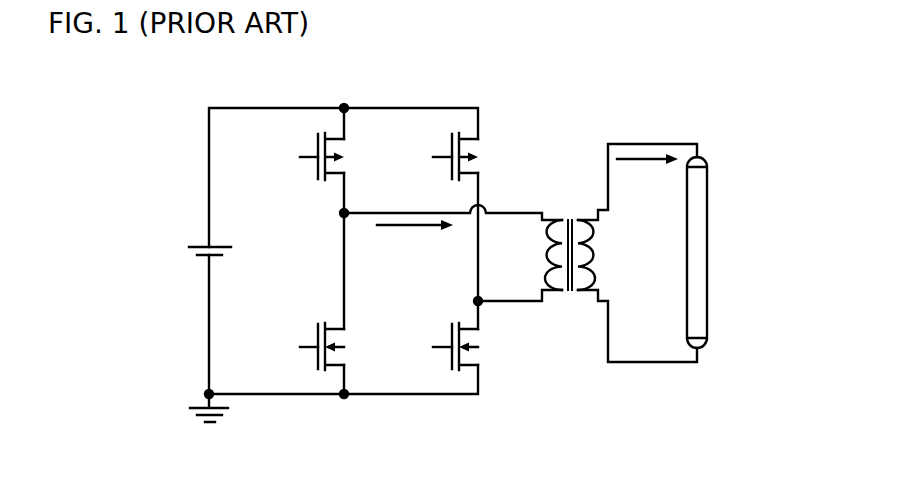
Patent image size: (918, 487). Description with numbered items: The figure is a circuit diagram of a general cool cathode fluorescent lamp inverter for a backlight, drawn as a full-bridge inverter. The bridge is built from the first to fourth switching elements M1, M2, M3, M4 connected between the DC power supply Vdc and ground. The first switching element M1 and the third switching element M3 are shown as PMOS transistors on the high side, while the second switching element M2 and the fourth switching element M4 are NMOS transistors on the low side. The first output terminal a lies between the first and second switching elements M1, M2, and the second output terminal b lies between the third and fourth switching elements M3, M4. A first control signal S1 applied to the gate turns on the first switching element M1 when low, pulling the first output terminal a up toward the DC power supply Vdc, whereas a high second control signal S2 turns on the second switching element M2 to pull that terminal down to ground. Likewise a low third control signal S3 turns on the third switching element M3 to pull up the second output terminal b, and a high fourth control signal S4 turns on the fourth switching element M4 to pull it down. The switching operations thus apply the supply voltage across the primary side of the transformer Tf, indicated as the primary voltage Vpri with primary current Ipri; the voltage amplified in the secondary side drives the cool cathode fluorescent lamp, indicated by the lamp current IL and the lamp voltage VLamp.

The DC power supply Vdc is at (190, 252).
The first switching element M1 is at (347, 154).
The second switching element M2 is at (347, 346).
The third switching element M3 is at (481, 154).
The fourth switching element M4 is at (481, 346).
The first control signal S1 is at (295, 157).
The second control signal S2 is at (295, 347).
The third control signal S3 is at (426, 157).
The fourth control signal S4 is at (426, 347).
The first output terminal a is at (335, 213).
The second output terminal b is at (469, 301).
The primary current Ipri is at (415, 242).
The primary voltage Vpri is at (516, 253).
The transformer Tf is at (570, 273).
The lamp current IL is at (647, 175).
The lamp (lamp voltage) VLamp is at (730, 252).